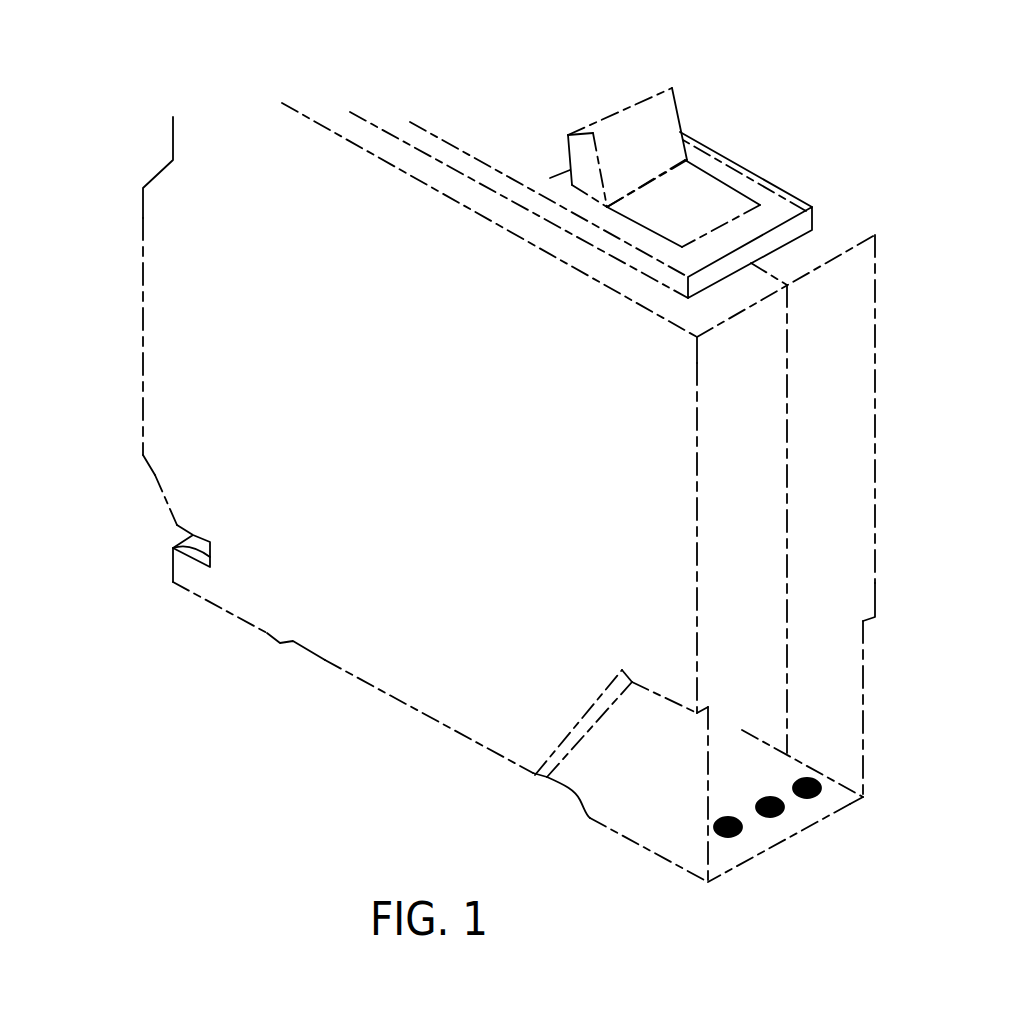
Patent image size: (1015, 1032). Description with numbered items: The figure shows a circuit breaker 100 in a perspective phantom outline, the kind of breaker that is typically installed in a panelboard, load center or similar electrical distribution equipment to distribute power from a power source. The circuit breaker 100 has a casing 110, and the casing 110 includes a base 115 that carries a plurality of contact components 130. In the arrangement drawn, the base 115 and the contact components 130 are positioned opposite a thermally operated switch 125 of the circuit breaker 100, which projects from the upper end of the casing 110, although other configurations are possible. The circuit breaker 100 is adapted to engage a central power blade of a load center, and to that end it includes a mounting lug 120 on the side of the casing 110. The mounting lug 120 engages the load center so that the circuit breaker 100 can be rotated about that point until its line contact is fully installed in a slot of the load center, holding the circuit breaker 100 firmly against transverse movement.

The circuit breaker 100 is at (521, 451).
The casing 110 is at (875, 373).
The base 115 is at (633, 790).
The mounting lug 120 is at (173, 548).
The thermally operated switch 125 is at (663, 125).
The contact components 130 is at (743, 827).